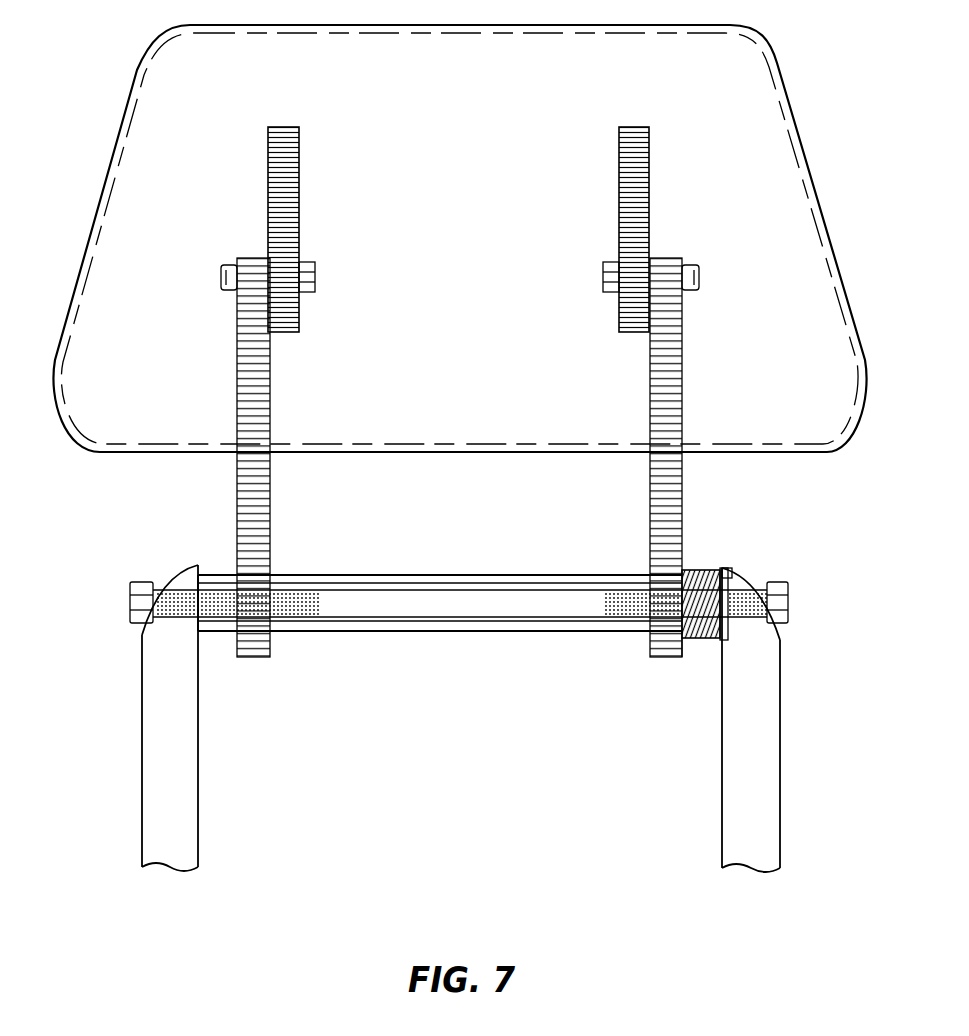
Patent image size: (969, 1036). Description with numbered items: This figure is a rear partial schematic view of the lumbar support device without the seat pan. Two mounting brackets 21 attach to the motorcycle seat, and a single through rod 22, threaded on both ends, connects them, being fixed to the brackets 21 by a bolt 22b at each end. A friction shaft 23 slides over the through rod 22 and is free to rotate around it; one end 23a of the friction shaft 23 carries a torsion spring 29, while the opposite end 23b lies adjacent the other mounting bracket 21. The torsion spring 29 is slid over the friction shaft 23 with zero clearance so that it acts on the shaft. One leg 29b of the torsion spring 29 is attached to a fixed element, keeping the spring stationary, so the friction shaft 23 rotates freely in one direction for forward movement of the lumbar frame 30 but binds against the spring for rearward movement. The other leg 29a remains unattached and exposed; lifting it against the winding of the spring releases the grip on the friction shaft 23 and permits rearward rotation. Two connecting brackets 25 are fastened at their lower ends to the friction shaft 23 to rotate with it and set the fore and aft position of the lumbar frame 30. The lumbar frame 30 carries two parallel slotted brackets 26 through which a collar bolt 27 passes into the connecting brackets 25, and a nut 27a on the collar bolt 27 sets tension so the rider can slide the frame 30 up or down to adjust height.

The lumbar frame 30 is at (152, 82).
The parallel brackets 26 is at (300, 185).
The collar bolt 27 is at (312, 262).
The nut 27a is at (235, 265).
The connecting brackets 25 is at (272, 520).
The friction shaft 23 is at (440, 575).
The end of friction shaft 23a is at (690, 575).
The tube left end 23b is at (215, 575).
The through rod 22 is at (375, 628).
The bolt 22b is at (132, 595).
The torsion spring 29 is at (705, 645).
The leg of the torsion spring 29a is at (678, 655).
The leg of the torsion spring 29b is at (728, 575).
The mounting brackets 21 is at (197, 780).